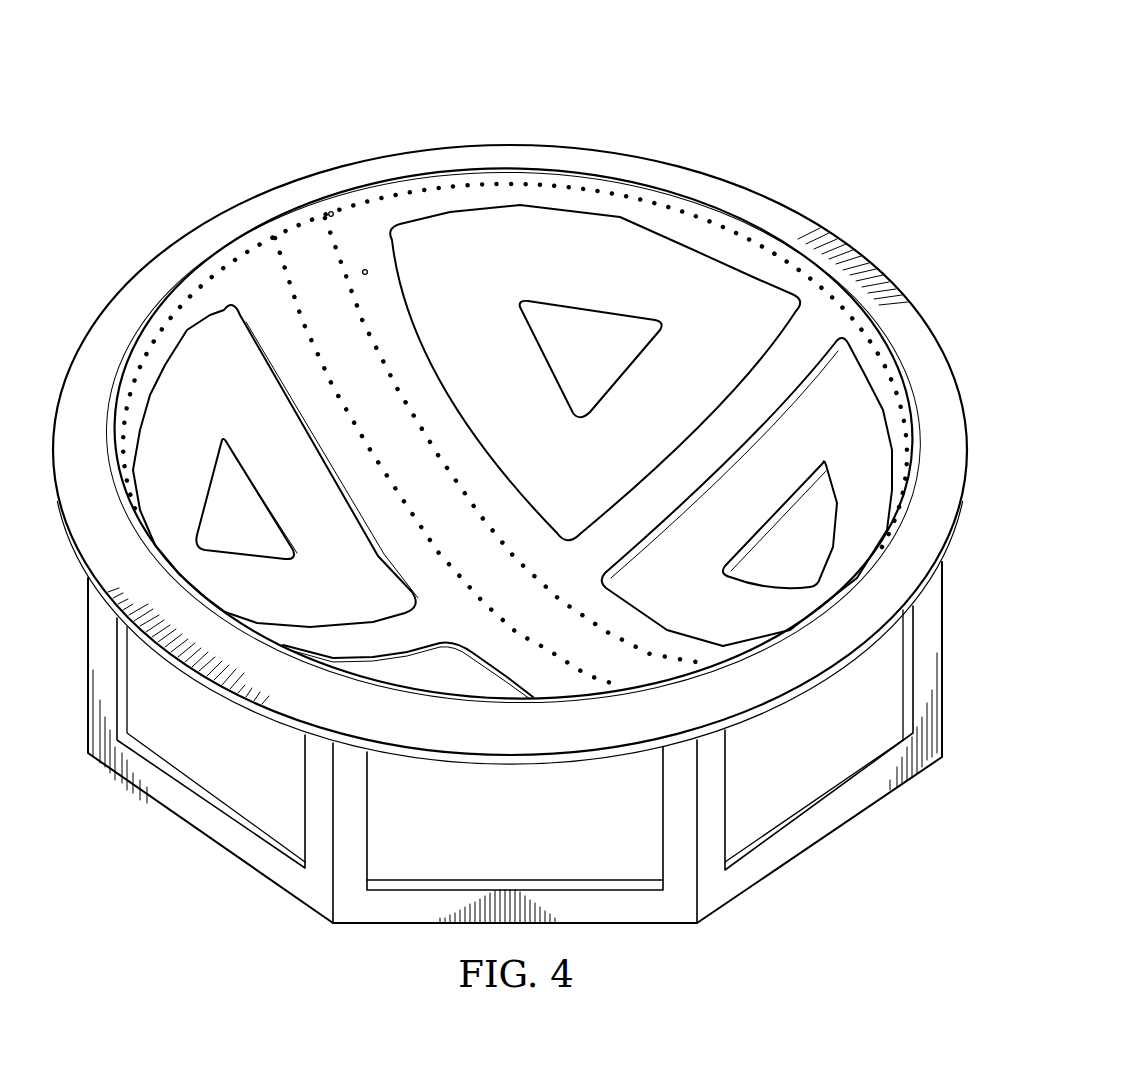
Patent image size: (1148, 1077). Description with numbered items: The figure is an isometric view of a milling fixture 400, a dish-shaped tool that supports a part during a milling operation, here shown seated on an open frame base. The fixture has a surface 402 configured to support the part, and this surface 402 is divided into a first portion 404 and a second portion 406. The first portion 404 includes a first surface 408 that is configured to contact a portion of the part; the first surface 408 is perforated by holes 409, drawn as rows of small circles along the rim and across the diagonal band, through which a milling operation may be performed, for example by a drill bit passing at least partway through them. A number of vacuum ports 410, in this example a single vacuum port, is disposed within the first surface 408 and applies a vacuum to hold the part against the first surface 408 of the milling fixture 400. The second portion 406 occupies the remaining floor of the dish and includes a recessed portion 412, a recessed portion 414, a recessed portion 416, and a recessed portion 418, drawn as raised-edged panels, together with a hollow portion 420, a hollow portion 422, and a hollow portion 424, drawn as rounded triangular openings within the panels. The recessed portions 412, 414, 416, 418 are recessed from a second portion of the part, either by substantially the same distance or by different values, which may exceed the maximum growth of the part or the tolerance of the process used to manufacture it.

The milling fixture 400 is at (787, 67).
The surface 402 is at (157, 203).
The first portion 404 is at (300, 229).
The second portion 406 is at (589, 488).
The first surface 408 is at (762, 228).
The holes 409 is at (339, 195).
The number of vacuum ports 410 is at (370, 272).
The recessed portion 412 is at (177, 378).
The recessed portion 414 is at (552, 228).
The recessed portion 416 is at (859, 380).
The recessed portion 418 is at (426, 668).
The hollow portion 420 is at (214, 501).
The hollow portion 422 is at (611, 321).
The hollow portion 424 is at (785, 536).